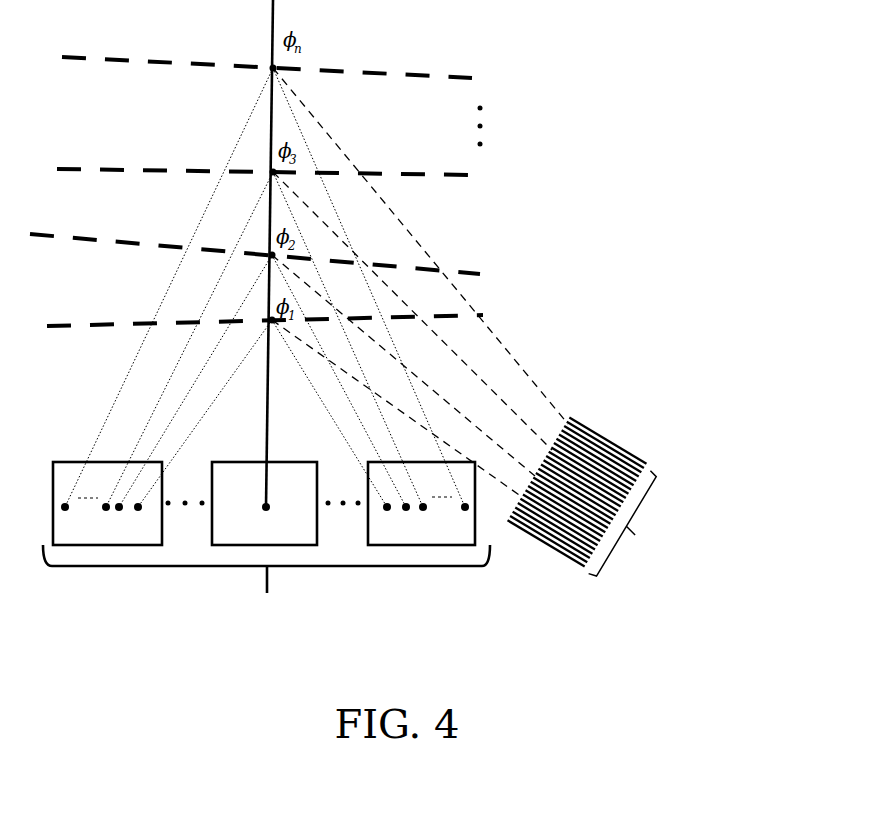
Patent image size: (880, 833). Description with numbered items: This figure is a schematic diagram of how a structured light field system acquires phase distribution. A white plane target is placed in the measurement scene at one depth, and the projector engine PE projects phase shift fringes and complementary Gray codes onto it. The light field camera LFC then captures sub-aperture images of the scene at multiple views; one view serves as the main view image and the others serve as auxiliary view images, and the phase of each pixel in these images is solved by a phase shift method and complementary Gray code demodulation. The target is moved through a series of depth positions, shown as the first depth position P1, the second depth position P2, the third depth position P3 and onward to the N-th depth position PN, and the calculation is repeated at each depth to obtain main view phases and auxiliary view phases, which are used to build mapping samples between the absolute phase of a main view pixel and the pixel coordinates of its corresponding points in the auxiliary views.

The depth position P_N PN is at (295, 76).
The depth position P_3 P3 is at (292, 184).
The depth position P_2 P2 is at (278, 265).
The depth position P_1 P1 is at (287, 324).
The light field camera LFC is at (266, 562).
The projector engine PE is at (619, 522).